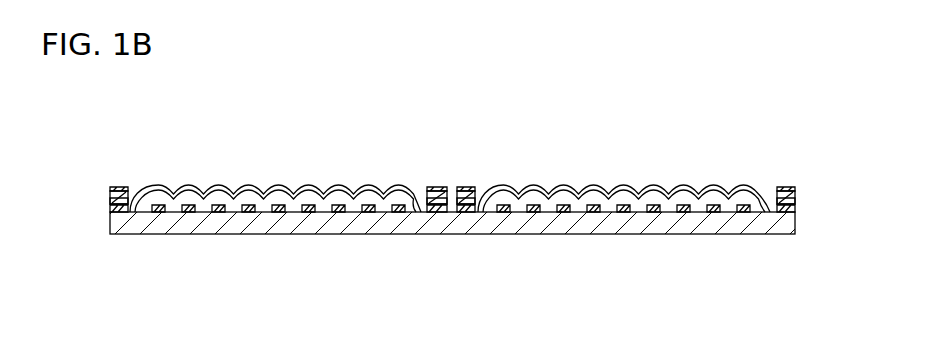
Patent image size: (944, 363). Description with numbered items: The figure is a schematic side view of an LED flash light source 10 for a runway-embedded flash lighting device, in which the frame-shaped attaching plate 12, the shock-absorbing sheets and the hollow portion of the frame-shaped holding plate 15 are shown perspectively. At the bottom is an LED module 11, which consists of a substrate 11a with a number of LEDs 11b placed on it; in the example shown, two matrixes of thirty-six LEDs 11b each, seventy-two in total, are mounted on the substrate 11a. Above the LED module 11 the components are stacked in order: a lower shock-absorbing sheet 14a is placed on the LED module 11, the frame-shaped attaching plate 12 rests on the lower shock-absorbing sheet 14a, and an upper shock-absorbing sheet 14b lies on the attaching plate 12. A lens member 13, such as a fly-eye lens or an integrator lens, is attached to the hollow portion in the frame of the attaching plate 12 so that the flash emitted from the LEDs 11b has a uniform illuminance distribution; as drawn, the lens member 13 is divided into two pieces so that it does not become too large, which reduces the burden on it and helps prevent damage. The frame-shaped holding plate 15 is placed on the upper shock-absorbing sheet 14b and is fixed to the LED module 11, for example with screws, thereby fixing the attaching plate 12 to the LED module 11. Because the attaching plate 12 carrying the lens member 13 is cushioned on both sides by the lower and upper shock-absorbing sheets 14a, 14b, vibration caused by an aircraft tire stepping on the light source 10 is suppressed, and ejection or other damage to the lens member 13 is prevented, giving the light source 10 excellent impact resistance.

The LED flash light source 10 is at (656, 95).
The LED module 11 is at (463, 288).
The substrate 11a is at (432, 213).
The LED 11b is at (392, 213).
The frame-shaped attaching plate 12 is at (797, 207).
The lens member 13 is at (161, 186).
The lower shock-absorbing sheet 14a is at (797, 220).
The upper shock-absorbing sheet 14b is at (797, 196).
The frame-shaped holding plate 15 is at (797, 189).